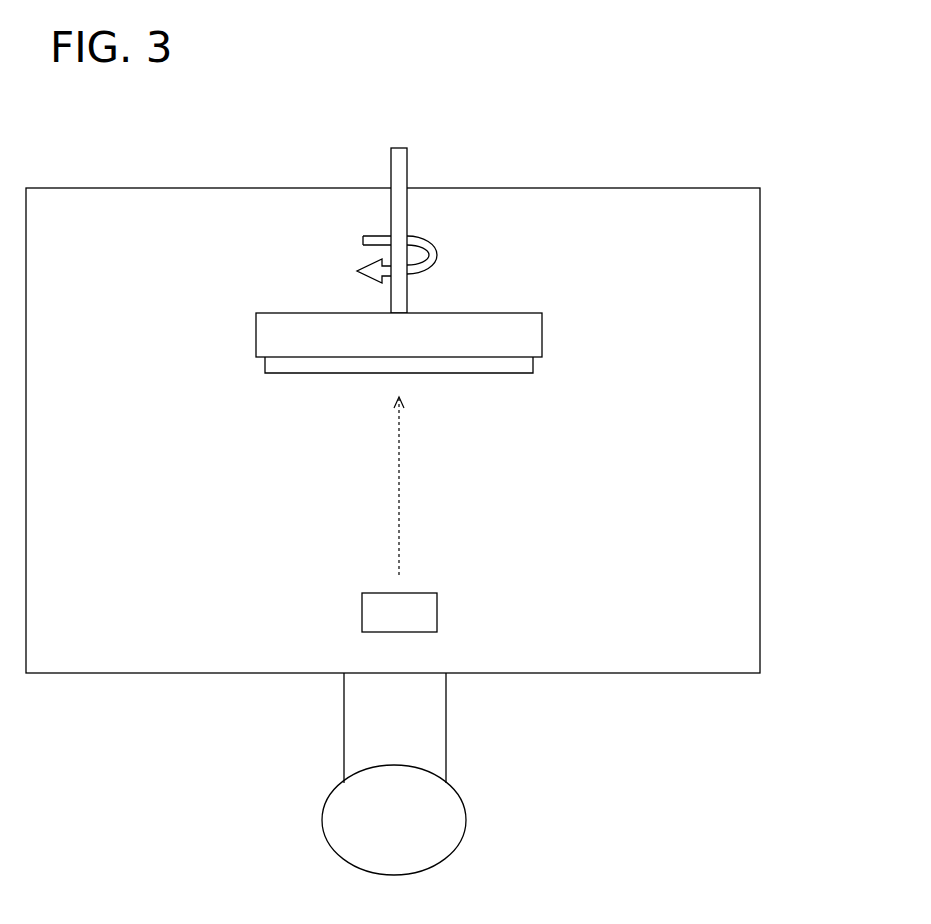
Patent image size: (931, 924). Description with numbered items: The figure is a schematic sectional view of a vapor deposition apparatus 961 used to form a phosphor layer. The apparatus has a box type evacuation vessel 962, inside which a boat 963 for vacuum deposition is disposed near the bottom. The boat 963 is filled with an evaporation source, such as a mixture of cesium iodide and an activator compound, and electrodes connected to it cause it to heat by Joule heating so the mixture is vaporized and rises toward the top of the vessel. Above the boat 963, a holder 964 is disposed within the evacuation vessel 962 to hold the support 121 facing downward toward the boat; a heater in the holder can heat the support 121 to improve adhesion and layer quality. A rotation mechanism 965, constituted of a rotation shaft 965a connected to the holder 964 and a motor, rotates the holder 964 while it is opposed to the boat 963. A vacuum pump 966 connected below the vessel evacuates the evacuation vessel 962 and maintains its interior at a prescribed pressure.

The vapor deposition apparatus 961 is at (466, 139).
The evacuation vessel 962 is at (762, 306).
The boat 963 is at (440, 610).
The holder 964 is at (545, 333).
The support 121 is at (538, 362).
The rotation mechanism 965 is at (424, 226).
The rotation shaft 965a is at (390, 213).
The vacuum pump 966 is at (468, 819).